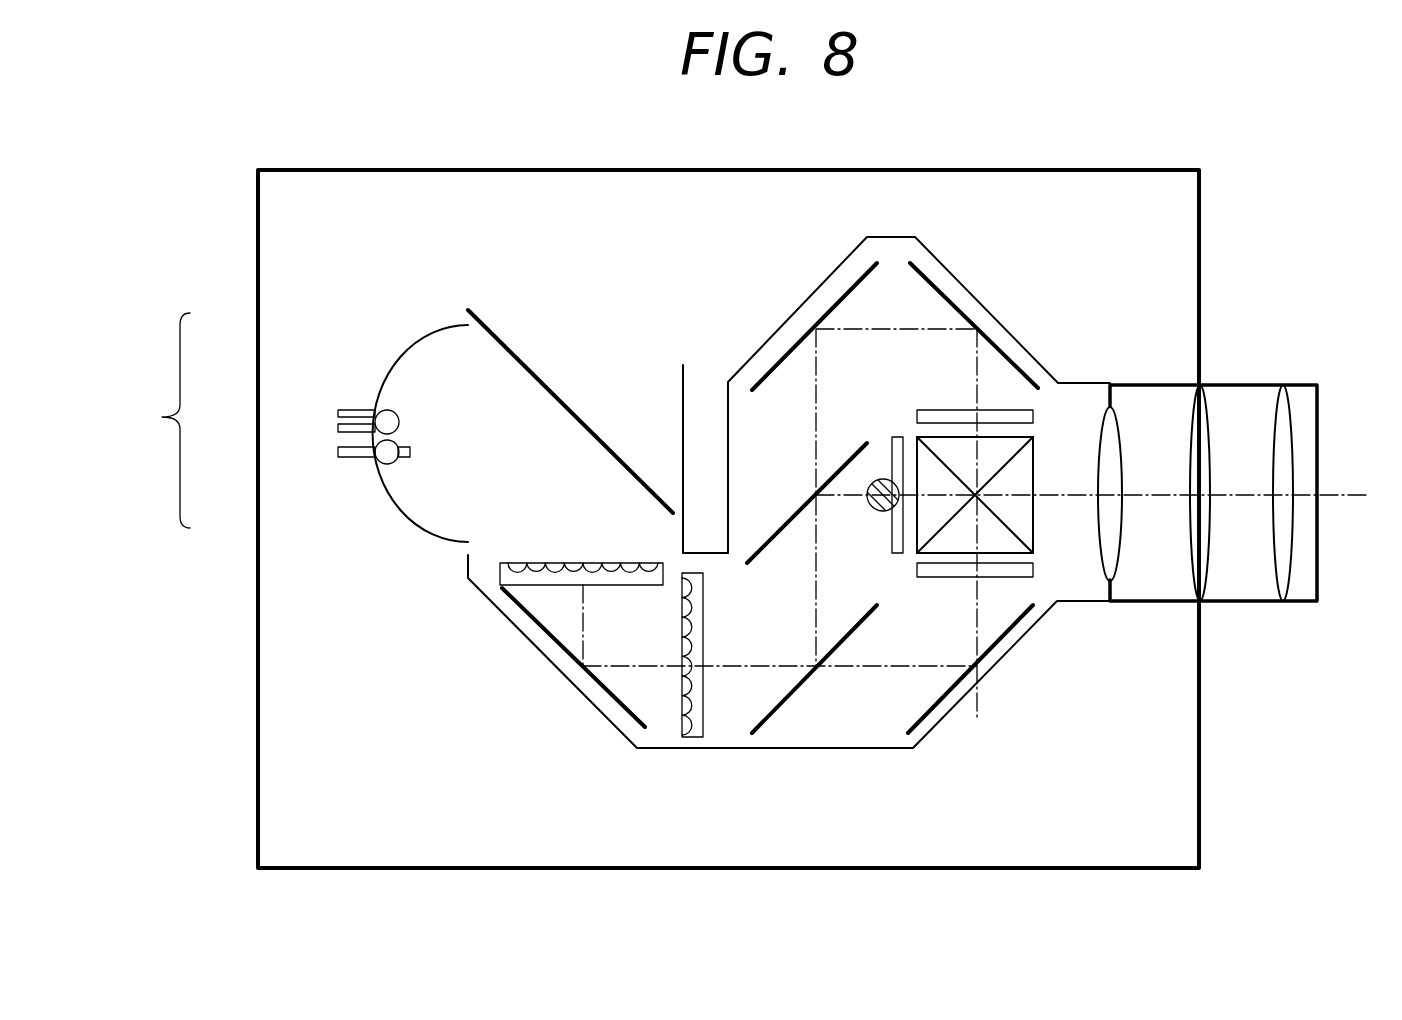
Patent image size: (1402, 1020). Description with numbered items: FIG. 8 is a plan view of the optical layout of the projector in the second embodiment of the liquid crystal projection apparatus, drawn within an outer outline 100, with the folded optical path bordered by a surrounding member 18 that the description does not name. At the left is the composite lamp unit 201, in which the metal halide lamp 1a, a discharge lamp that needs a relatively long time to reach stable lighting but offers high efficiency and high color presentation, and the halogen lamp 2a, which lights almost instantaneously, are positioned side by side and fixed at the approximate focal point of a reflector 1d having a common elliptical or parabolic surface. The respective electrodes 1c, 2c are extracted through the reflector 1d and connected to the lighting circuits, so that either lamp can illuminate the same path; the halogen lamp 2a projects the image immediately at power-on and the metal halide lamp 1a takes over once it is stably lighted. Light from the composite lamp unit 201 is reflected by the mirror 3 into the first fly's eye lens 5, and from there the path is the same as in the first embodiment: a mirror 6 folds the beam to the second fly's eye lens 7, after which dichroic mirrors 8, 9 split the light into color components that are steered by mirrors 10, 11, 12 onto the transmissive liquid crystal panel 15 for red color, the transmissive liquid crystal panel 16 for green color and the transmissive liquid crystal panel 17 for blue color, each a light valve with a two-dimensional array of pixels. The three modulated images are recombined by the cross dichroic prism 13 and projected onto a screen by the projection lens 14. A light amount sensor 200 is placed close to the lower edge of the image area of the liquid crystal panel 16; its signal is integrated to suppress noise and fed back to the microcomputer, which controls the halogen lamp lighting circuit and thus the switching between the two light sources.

The projector housing 100 is at (1201, 213).
The composite lamp unit 201 is at (292, 427).
The reflector 1d is at (392, 358).
The halogen lamp 2a is at (377, 400).
The electrode 2c is at (338, 413).
The electrode 1c is at (338, 452).
The metal halide lamp 1a is at (385, 462).
The mirror 3 is at (550, 378).
The first fly's eye lens 5 is at (532, 587).
The mirror 6 is at (550, 637).
The second fly's eye lens 7 is at (698, 705).
The dichroic mirror 8 is at (775, 712).
The dichroic mirror 9 is at (792, 513).
The mirror 10 is at (957, 695).
The mirror 11 is at (845, 292).
The mirror 12 is at (960, 308).
The cross dichroic prism 13 is at (1037, 460).
The projection lens 14 is at (1163, 383).
The transmissive liquid crystal panel for red color 15 is at (997, 407).
The transmissive liquid crystal panel for green color 16 is at (892, 438).
The transmissive liquid crystal panel for blue color 17 is at (1033, 570).
The optical unit base 18 is at (897, 237).
The light amount sensor 200 is at (880, 511).